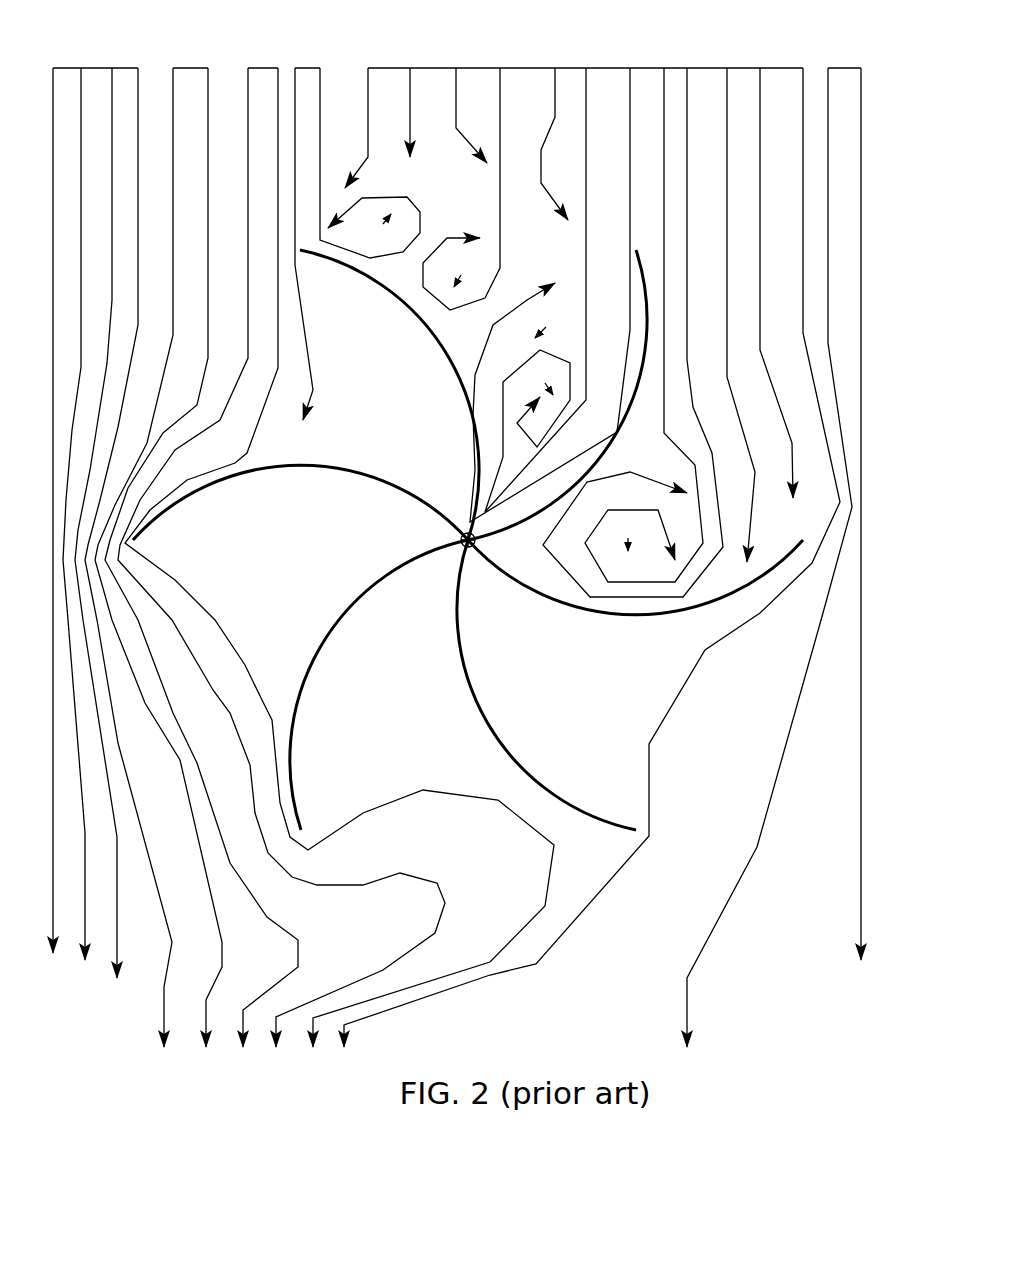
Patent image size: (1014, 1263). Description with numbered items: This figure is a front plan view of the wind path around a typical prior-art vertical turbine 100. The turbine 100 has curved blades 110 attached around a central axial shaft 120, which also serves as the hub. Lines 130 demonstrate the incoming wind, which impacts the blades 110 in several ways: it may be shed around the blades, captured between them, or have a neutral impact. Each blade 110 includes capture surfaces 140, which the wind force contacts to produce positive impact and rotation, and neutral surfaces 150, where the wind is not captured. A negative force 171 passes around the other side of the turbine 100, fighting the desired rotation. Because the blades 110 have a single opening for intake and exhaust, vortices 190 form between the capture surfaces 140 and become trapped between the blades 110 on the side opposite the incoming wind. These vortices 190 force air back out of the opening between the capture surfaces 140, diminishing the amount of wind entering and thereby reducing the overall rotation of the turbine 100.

The vertical turbine 100 is at (683, 810).
The blades 110 is at (468, 540).
The axial shaft 120 is at (461, 551).
The lines 130 is at (828, 112).
The capture surfaces 140 is at (437, 336).
The neutral surfaces 150 is at (350, 478).
The negative force 171 is at (312, 442).
The vortices 190 is at (521, 332).